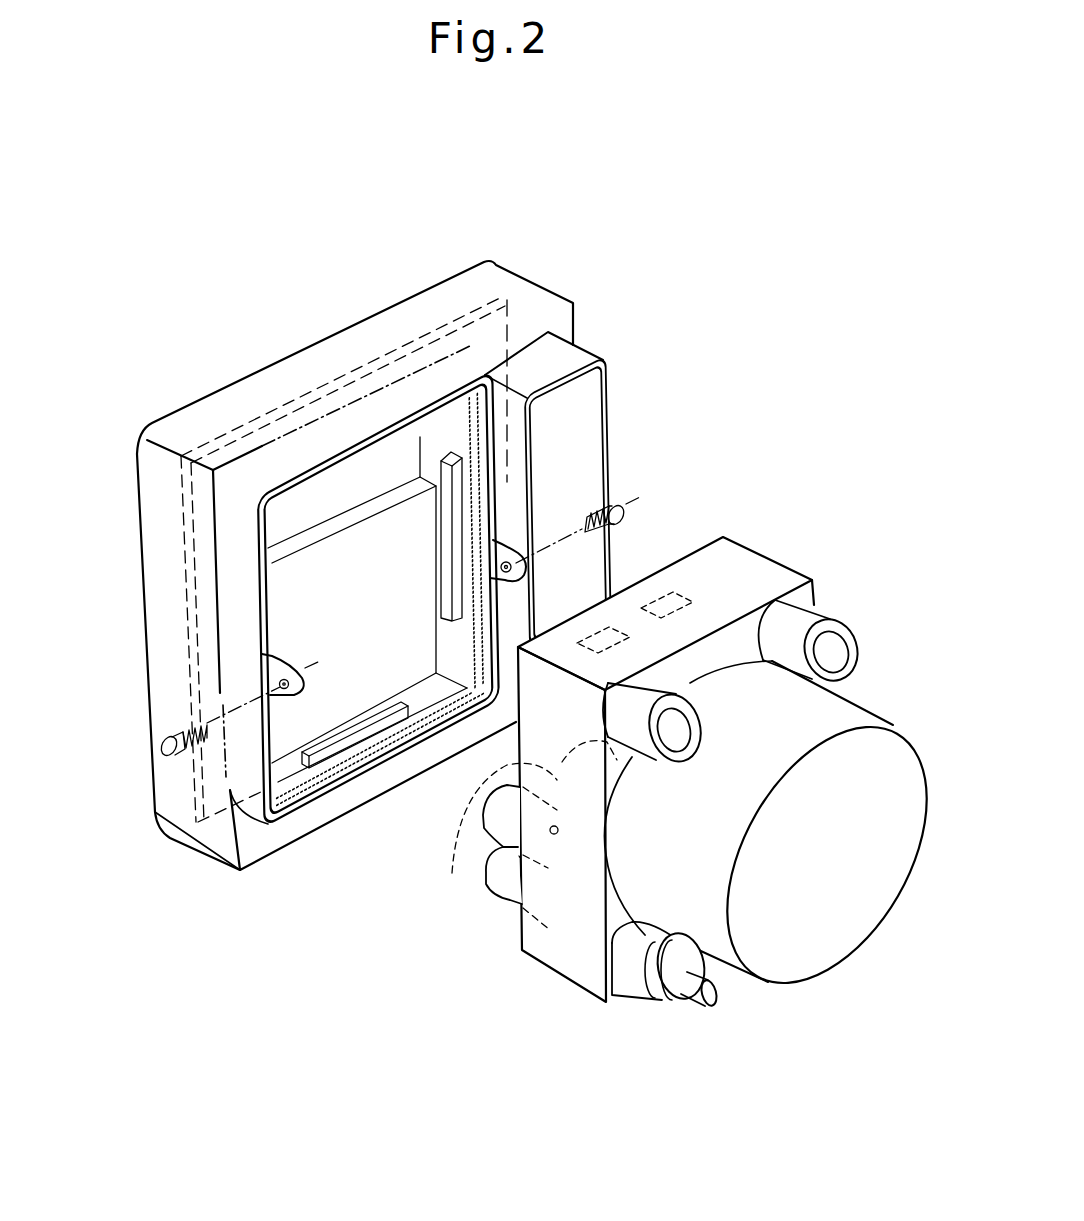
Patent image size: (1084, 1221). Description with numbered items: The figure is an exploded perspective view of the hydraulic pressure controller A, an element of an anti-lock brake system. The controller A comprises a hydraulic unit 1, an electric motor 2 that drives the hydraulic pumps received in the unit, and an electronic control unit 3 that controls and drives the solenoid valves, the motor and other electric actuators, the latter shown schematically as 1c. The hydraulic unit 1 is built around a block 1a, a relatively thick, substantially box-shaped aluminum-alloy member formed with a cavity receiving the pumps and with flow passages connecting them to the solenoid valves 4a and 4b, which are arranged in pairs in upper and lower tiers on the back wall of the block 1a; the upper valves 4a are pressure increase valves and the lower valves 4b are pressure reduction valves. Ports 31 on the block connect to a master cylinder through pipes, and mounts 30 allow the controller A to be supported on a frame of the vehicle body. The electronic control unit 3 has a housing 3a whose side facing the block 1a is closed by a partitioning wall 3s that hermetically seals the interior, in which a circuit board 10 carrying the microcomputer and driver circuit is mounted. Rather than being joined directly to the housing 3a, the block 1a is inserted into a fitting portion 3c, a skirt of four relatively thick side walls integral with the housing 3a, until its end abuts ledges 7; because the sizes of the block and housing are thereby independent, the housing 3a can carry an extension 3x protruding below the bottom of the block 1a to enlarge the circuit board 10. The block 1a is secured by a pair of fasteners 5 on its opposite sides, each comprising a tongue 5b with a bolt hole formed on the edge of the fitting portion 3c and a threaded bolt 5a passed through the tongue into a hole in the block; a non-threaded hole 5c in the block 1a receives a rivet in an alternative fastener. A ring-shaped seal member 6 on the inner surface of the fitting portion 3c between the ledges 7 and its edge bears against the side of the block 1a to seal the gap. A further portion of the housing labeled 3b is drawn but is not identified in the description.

The hydraulic unit 1 is at (773, 553).
The block 1a is at (568, 955).
The electric actuators 1c is at (668, 603).
The electric motor 2 is at (870, 703).
The electronic control unit 3 is at (538, 277).
The housing 3a is at (152, 503).
The side wall portion 3b is at (570, 355).
The fitting portion 3c is at (238, 672).
The partitioning wall 3s is at (392, 665).
The extension 3x is at (245, 845).
The solenoid valves 4a is at (485, 829).
The solenoid valves 4b is at (508, 898).
The fasteners 5 is at (291, 654).
The threaded bolt 5a is at (160, 752).
The tongue 5b is at (303, 685).
The non-threaded hole 5c is at (555, 834).
The seal member 6 is at (323, 780).
The ledges 7 is at (457, 530).
The circuit board 10 is at (183, 590).
The mounts 30 is at (624, 964).
The ports 31 is at (820, 620).
The hydraulic pressure controller A is at (409, 258).